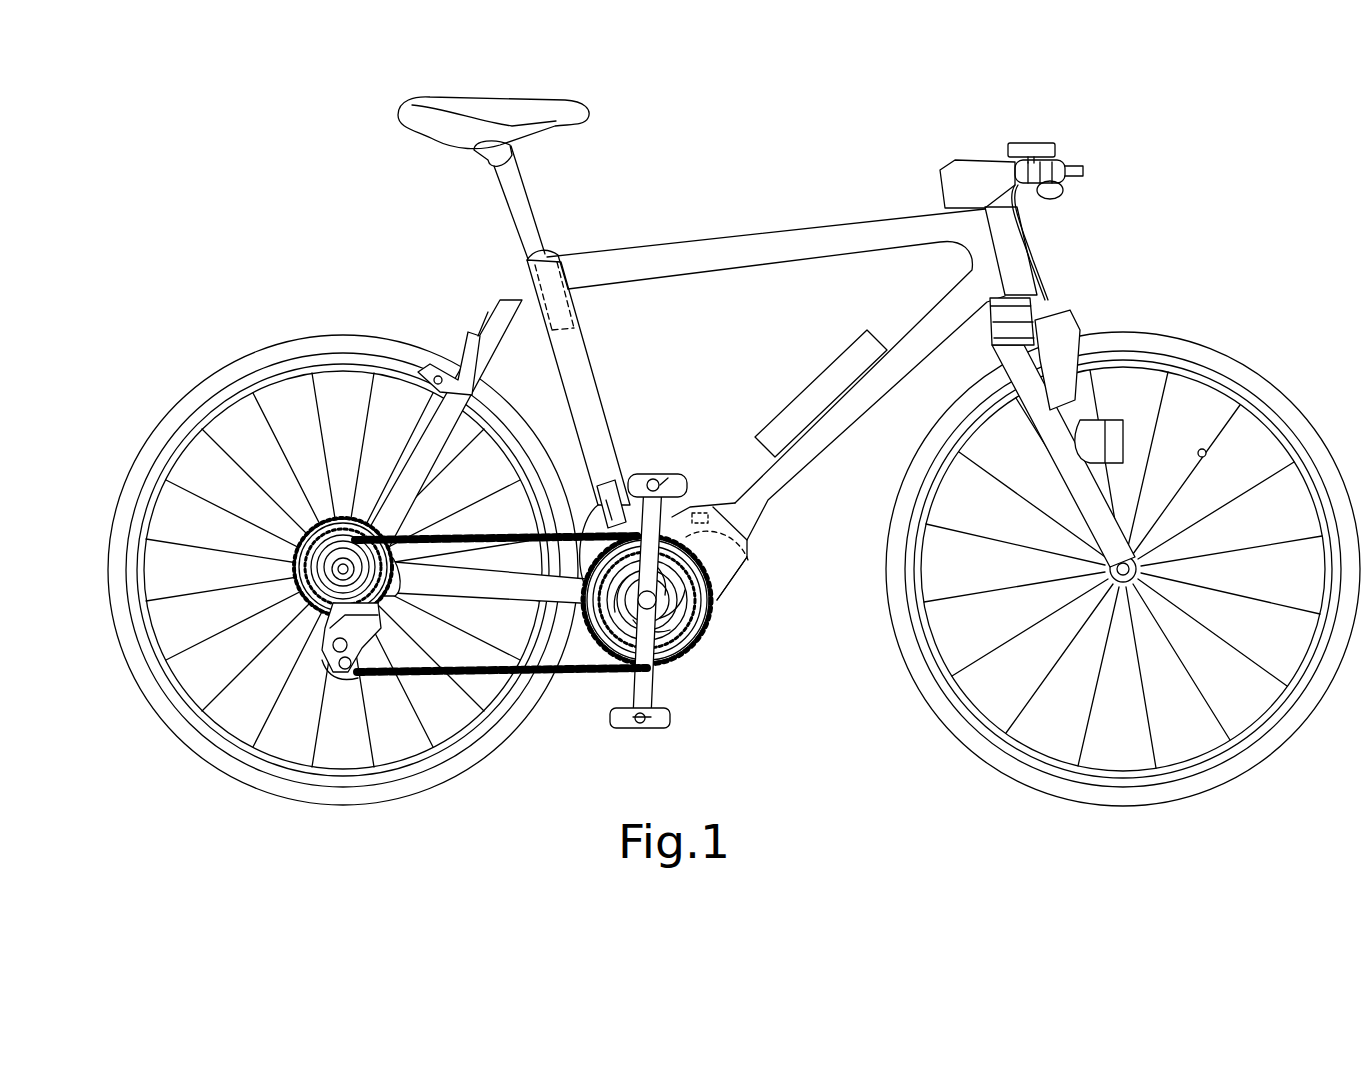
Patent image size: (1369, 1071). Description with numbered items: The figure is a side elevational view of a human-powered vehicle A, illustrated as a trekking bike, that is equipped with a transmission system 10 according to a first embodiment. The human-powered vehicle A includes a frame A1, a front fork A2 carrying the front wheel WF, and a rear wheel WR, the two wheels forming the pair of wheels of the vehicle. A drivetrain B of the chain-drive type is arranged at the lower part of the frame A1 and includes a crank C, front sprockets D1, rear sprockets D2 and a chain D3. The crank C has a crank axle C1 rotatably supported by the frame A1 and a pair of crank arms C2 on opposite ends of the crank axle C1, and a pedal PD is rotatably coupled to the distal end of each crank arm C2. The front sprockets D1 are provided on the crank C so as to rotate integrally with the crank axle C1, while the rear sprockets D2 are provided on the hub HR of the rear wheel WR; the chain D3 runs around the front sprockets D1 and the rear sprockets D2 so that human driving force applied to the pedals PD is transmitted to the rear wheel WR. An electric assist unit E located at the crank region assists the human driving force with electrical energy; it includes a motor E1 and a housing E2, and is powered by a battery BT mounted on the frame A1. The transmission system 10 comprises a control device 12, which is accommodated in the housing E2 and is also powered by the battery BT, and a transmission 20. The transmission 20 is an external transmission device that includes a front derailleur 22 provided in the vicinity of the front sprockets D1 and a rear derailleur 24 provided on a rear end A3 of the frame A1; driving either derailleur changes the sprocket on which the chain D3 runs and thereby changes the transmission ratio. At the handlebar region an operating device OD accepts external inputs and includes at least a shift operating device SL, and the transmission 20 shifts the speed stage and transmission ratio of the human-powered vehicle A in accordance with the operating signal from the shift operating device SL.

The human-powered vehicle A is at (1021, 75).
The frame A1 is at (817, 194).
The front fork A2 is at (1047, 440).
The rear end A3 is at (368, 527).
The rear wheel WR is at (180, 384).
The front wheel WF is at (1270, 384).
The operating device OD is at (1107, 141).
The handlebar H is at (1068, 180).
The shift operating device SL is at (1077, 213).
The battery BT is at (817, 378).
The electric assist unit E is at (770, 622).
The motor E1 is at (750, 555).
The housing E2 is at (753, 580).
The control device 12 is at (712, 519).
The transmission system 10 is at (700, 438).
The crank C is at (756, 701).
The crank axle C1 is at (704, 630).
The crank arms C2 is at (688, 500).
The pedal PD is at (640, 470).
The drivetrain B is at (735, 763).
The front sprockets D1 is at (570, 641).
The rear sprockets D2 is at (305, 535).
The chain D3 is at (420, 680).
The hub HR is at (390, 596).
The transmission 20 is at (474, 552).
The front derailleur 22 is at (590, 482).
The rear derailleur 24 is at (378, 665).